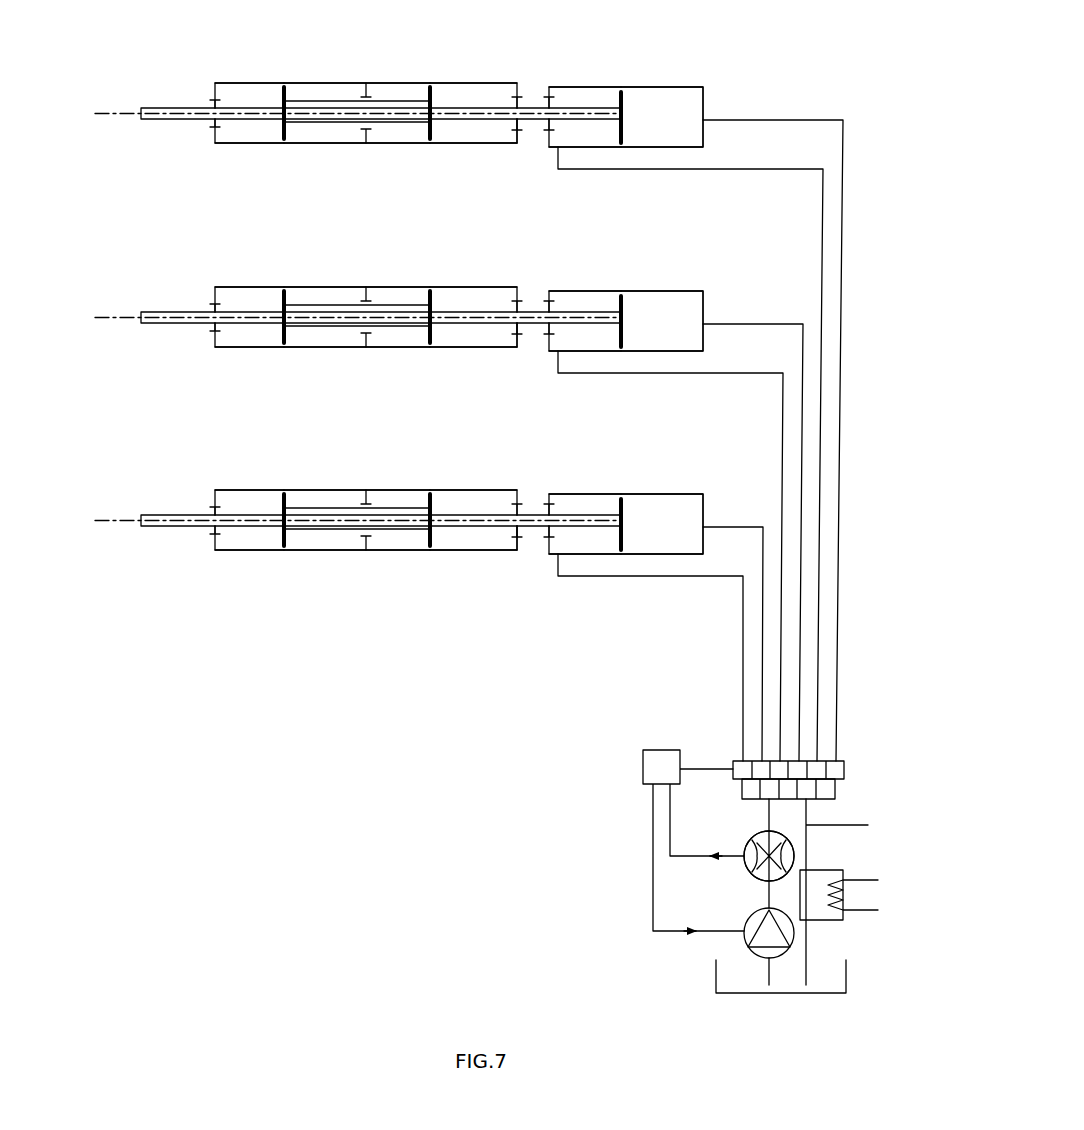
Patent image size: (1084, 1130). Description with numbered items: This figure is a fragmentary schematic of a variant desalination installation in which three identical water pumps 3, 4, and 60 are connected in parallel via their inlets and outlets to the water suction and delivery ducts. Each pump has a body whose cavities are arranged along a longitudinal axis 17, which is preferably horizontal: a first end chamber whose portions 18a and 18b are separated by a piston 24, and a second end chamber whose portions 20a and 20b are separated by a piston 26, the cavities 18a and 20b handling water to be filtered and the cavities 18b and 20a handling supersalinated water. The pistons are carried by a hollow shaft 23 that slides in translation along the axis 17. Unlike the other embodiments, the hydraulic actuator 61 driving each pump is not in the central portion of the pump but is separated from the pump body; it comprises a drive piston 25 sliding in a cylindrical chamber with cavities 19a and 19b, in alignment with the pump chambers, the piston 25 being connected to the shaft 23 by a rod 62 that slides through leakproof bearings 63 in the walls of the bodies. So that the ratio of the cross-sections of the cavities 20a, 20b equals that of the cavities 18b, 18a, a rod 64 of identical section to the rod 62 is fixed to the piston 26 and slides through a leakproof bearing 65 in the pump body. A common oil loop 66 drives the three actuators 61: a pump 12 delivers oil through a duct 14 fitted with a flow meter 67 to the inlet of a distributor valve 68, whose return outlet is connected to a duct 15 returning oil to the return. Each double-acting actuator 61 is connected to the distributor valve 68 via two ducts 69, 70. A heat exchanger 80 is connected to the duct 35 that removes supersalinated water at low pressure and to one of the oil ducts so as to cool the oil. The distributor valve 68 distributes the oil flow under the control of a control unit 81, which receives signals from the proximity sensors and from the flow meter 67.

The pump 3 is at (243, 150).
The pump 4 is at (357, 353).
The pump 60 is at (352, 557).
The pump 12 is at (748, 924).
The duct 14 is at (766, 831).
The duct 15 is at (845, 825).
The axis 17 is at (126, 106).
The chamber portion 18a is at (398, 93).
The chamber portion 18b is at (484, 96).
The central chamber portion 19a is at (575, 93).
The central chamber portion 19b is at (688, 101).
The chamber portion 20a is at (318, 93).
The chamber portion 20b is at (252, 92).
The hollow shaft 23 is at (388, 124).
The piston 24 is at (440, 145).
The drive piston 25 is at (624, 117).
The piston 26 is at (288, 139).
The duct 35 is at (880, 880).
The hydraulic actuator 61 is at (712, 70).
The rod 62 is at (524, 128).
The leakproof bearings 63 is at (548, 94).
The rod 64 is at (178, 121).
The leakproof bearing 65 is at (208, 97).
The loop 66 is at (770, 996).
The flow meter 67 is at (748, 875).
The distributor valve 68 is at (850, 756).
The duct 69 is at (648, 170).
The duct 70 is at (738, 118).
The heat exchanger 80 is at (845, 922).
The control unit 81 is at (665, 750).